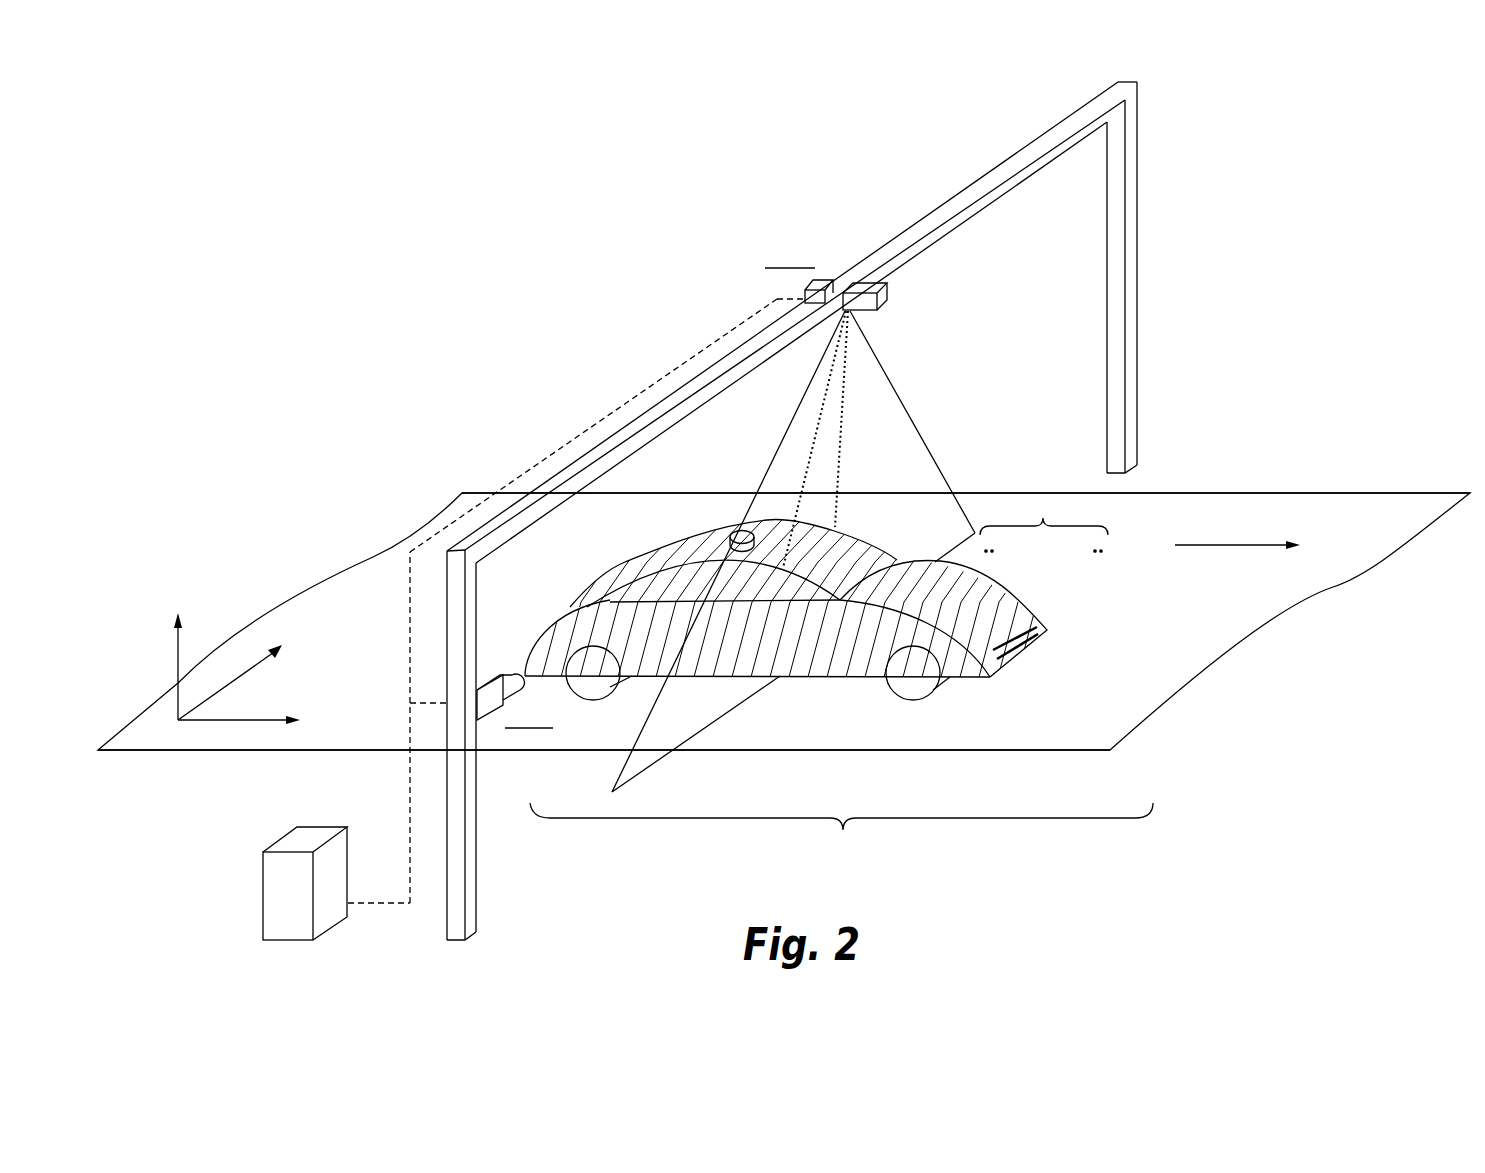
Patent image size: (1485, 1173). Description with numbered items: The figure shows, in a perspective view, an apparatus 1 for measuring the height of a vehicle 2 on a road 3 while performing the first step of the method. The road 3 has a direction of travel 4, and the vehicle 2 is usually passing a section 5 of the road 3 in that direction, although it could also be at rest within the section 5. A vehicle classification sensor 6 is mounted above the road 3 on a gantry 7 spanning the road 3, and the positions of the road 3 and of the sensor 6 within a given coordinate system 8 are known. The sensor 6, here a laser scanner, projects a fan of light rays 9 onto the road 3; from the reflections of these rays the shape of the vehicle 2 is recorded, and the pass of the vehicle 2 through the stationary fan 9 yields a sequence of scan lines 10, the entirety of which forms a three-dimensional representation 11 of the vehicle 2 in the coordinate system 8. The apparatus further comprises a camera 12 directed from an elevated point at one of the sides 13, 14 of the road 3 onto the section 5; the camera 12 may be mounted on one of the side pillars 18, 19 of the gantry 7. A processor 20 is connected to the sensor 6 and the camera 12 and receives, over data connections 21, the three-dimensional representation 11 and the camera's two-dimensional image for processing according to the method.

The apparatus 1 is at (350, 292).
The vehicle 2 is at (833, 600).
The road 3 is at (1210, 655).
The direction of travel 4 is at (1237, 533).
The section 5 is at (841, 771).
The vehicle classification sensor 6 is at (889, 298).
The gantry 7 is at (957, 215).
The coordinate system 8 is at (178, 668).
The fan of light rays 9 is at (922, 452).
The scan lines 10 is at (963, 610).
The 3D representation 11 is at (1044, 526).
The camera 12 is at (503, 673).
The side of the road 13 is at (1055, 785).
The side of the road 14 is at (1419, 479).
The side pillar 18 is at (470, 908).
The side pillar 19 is at (1135, 440).
The processor 20 is at (275, 908).
The data connections 21 is at (408, 643).